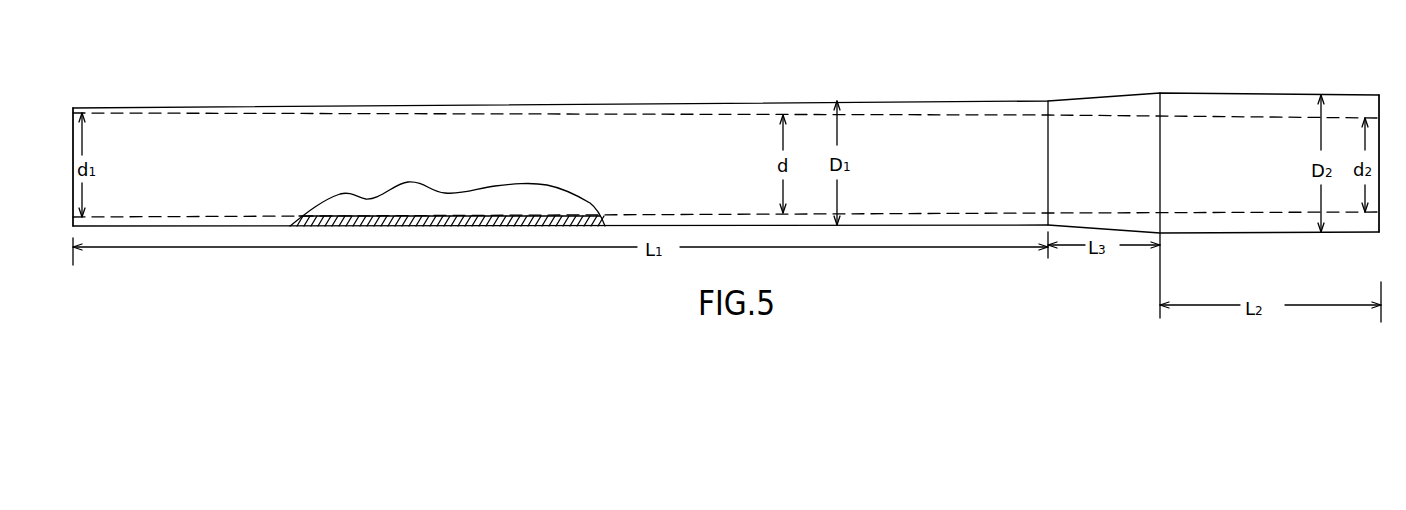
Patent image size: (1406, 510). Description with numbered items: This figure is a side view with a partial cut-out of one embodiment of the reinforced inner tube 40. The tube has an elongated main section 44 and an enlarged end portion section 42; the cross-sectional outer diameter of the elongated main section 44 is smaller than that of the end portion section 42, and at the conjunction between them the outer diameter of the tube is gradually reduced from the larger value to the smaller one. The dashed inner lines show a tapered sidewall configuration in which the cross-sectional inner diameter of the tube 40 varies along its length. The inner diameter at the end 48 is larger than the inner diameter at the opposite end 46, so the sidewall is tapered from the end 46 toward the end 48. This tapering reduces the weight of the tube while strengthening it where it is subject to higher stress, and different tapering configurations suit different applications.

The reinforced inner tube 40 is at (473, 67).
The end portion section 42 is at (1239, 233).
The elongated main section 44 is at (636, 114).
The end 46 is at (1380, 200).
The end 48 is at (74, 126).